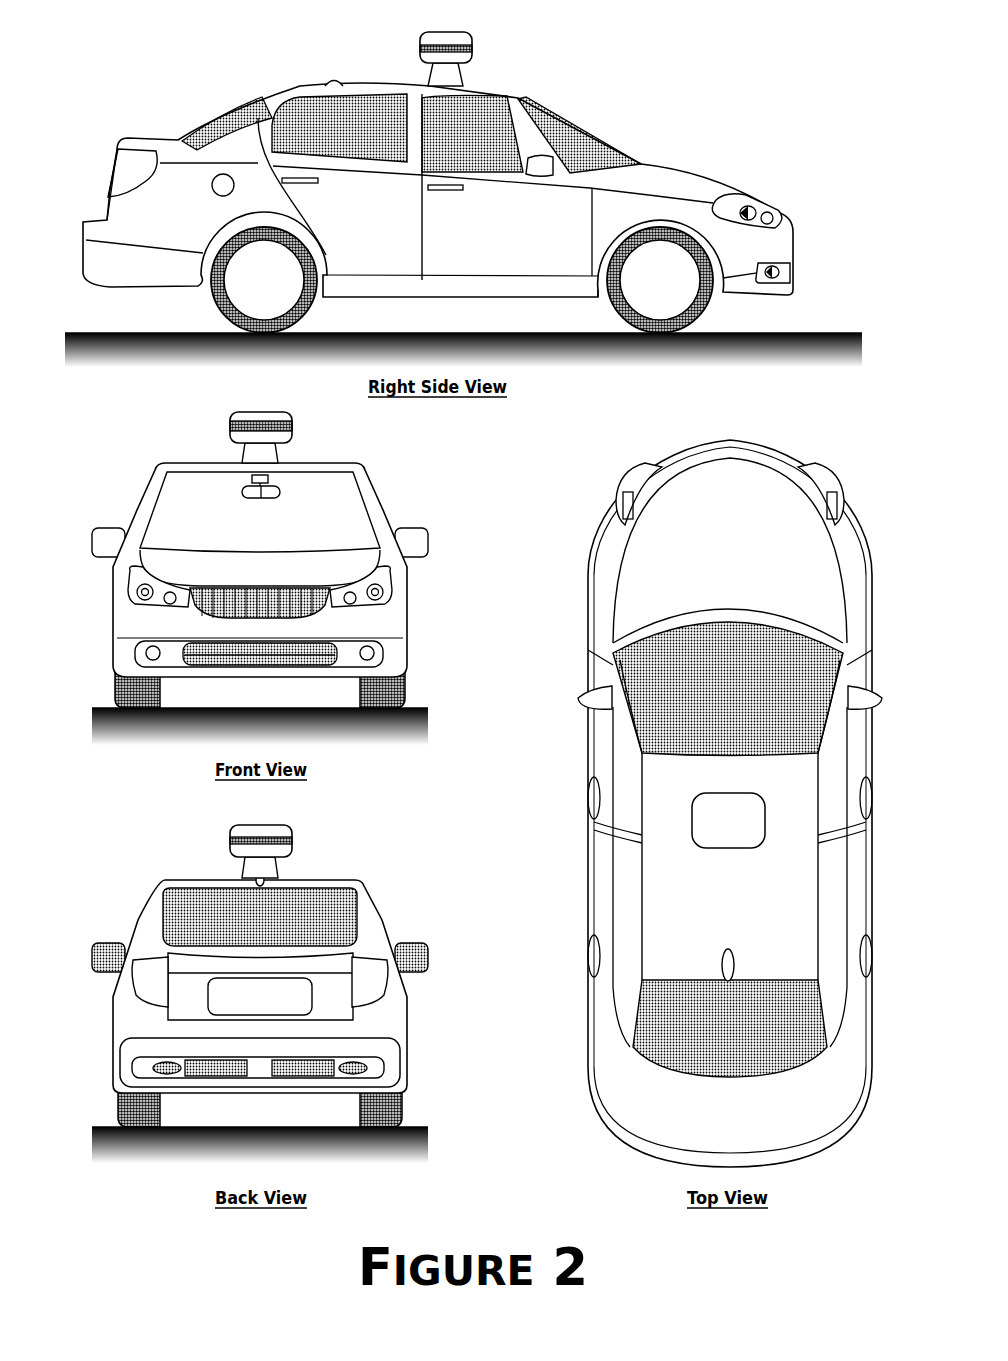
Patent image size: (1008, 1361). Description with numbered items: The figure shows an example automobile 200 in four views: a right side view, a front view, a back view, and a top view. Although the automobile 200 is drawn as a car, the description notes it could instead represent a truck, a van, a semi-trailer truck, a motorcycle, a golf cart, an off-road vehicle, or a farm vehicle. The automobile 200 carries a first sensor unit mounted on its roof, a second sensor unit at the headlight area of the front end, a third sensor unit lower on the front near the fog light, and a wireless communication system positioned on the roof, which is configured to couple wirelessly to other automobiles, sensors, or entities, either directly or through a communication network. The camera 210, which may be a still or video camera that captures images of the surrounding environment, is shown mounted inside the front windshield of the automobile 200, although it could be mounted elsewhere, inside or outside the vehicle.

The automobile 200 is at (79, 129).
The camera 210 is at (272, 482).